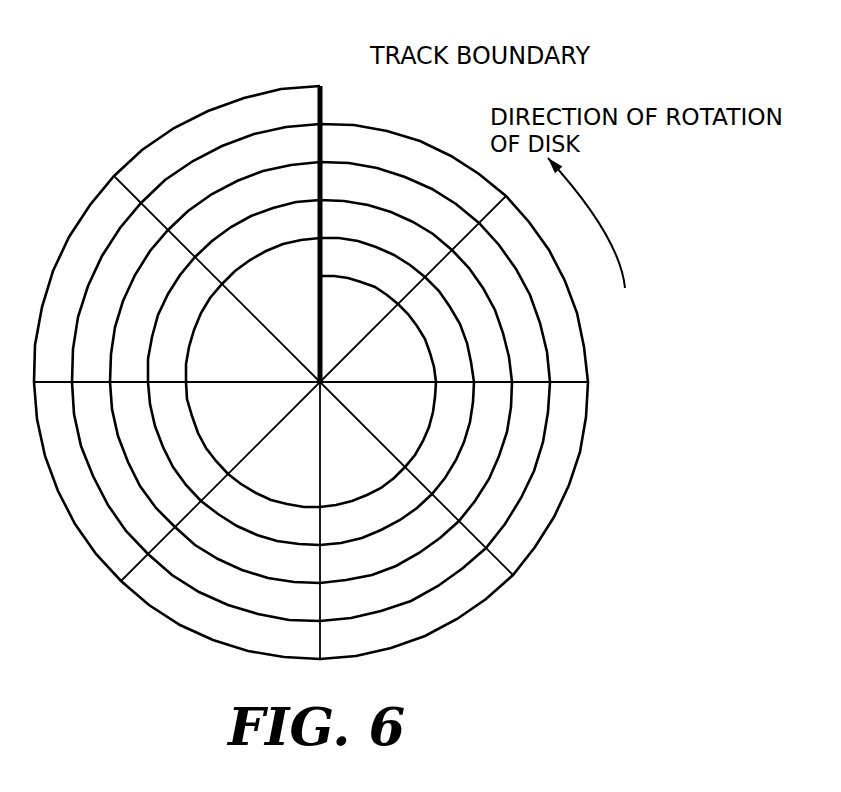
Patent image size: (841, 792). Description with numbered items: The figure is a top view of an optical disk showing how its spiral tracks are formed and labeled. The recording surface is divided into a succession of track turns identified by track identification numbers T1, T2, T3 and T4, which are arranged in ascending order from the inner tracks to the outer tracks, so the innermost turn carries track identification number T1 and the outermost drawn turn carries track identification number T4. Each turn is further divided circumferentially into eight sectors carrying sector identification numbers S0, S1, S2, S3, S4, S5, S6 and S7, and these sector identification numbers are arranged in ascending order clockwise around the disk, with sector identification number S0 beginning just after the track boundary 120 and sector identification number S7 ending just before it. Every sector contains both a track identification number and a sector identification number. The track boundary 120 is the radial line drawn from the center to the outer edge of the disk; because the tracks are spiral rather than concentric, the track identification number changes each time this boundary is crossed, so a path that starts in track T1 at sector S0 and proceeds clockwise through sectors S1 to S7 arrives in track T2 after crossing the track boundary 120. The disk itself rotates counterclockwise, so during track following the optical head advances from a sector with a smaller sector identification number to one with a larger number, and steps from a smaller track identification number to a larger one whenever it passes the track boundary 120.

The track boundary 120 is at (321, 103).
The track identification number T1 is at (309, 385).
The track identification number T2 is at (310, 390).
The track identification number T3 is at (309, 391).
The track identification number T4 is at (309, 391).
The sector identification number S0 is at (416, 230).
The sector identification number S1 is at (502, 346).
The sector identification number S2 is at (480, 491).
The sector identification number S3 is at (363, 580).
The sector identification number S4 is at (209, 552).
The sector identification number S5 is at (116, 425).
The sector identification number S6 is at (143, 262).
The sector identification number S7 is at (274, 169).